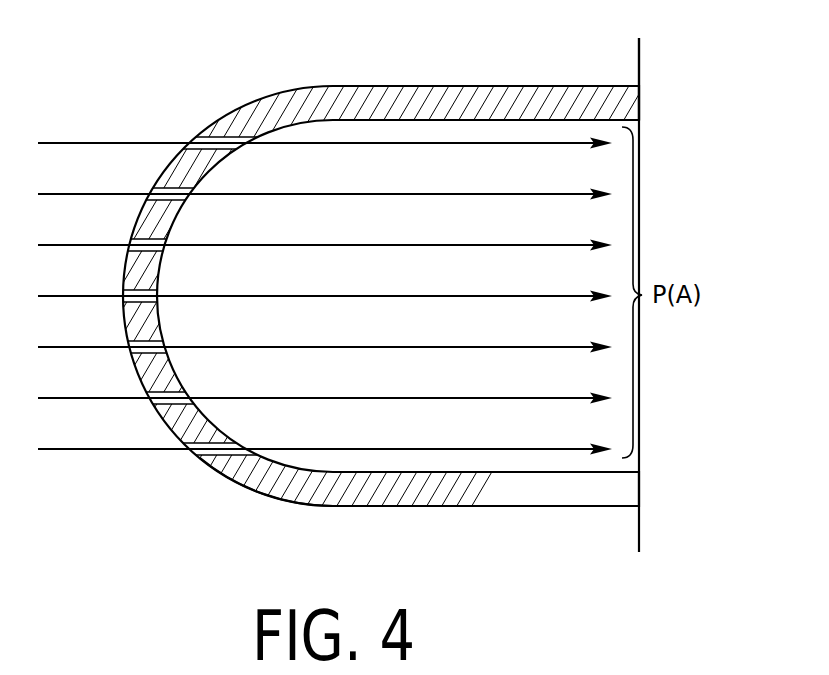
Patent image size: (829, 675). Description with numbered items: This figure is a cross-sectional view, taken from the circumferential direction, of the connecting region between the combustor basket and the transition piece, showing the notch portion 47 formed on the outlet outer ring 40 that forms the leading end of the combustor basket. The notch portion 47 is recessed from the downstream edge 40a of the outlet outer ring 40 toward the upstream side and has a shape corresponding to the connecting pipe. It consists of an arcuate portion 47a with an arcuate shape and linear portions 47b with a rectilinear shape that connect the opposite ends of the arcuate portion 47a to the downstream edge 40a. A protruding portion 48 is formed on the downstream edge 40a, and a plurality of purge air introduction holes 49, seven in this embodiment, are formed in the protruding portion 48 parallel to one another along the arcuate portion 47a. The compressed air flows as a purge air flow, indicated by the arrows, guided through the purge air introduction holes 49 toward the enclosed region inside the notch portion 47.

The notch portion 47 is at (370, 303).
The arcuate portion 47a is at (233, 477).
The linear portions 47b is at (370, 308).
The protruding portion 48 is at (338, 97).
The purge air introduction holes 49 is at (192, 136).
The outlet outer ring 40 is at (699, 295).
The downstream edge 40a is at (639, 62).